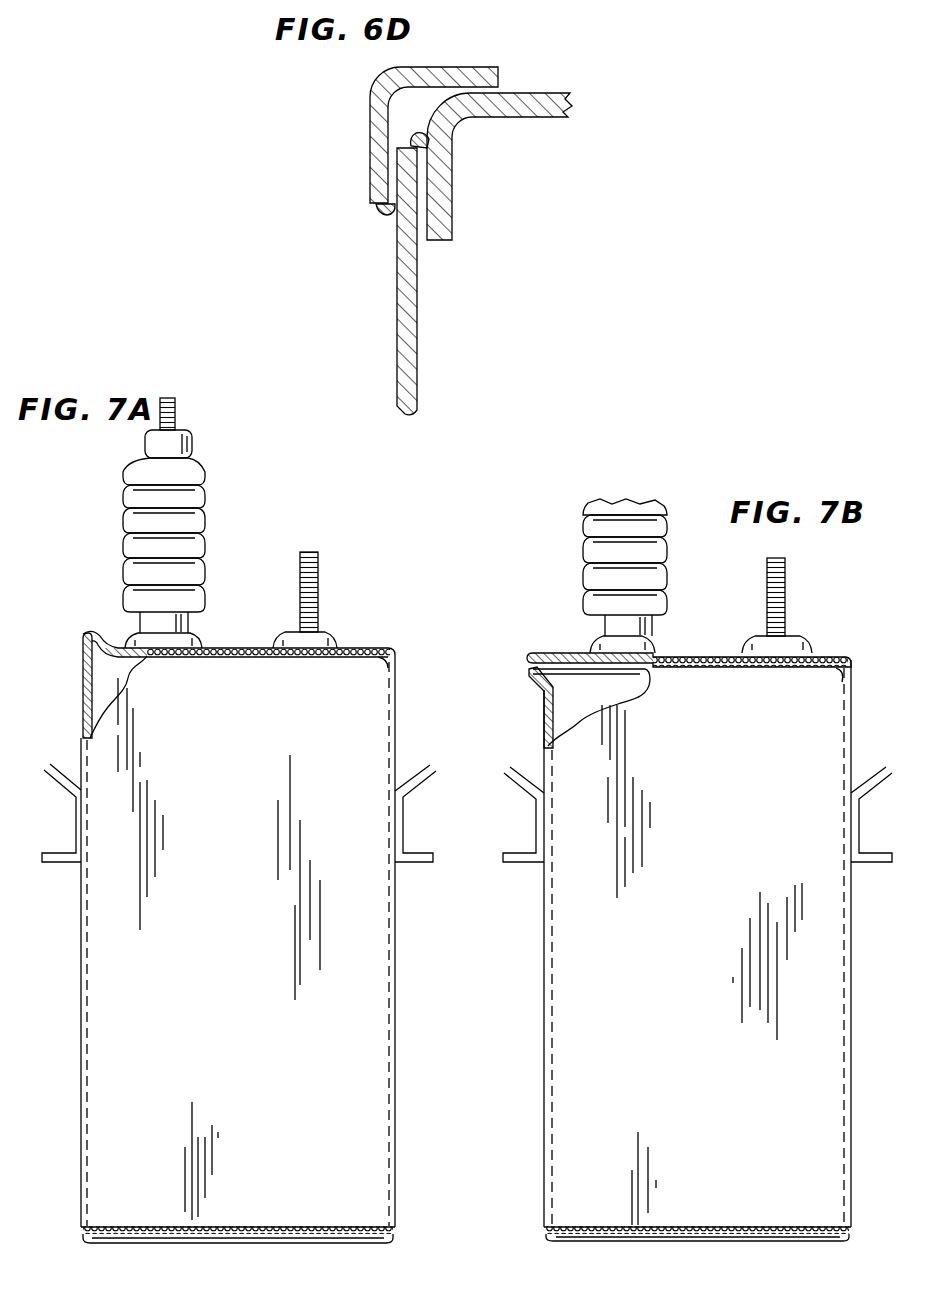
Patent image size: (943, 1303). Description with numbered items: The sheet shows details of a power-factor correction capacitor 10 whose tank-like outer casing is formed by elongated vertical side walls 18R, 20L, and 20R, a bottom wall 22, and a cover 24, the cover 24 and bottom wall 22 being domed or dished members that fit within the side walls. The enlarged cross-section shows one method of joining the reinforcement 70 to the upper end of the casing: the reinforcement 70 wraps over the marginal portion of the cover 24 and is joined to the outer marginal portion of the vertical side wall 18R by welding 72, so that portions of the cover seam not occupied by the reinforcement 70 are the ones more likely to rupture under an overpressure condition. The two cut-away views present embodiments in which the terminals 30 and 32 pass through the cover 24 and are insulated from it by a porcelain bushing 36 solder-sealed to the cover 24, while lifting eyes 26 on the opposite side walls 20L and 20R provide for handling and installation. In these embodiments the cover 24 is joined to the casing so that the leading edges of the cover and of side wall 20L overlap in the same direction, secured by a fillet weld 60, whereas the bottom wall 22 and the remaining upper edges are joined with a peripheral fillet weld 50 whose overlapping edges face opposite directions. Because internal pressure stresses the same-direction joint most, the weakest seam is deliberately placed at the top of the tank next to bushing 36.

In FIG. 7A, the power-factor correction capacitor 10 is at (239, 970).
In FIG. 7B, the power-factor correction capacitor 10 is at (699, 974).
In FIG. 6D, the side wall 18R is at (397, 318).
In FIG. 7A, the side wall 18R is at (250, 764).
In FIG. 7B, the side wall 18R is at (719, 771).
In FIG. 7A, the side wall 20L is at (81, 1003).
In FIG. 7B, the side wall 20L is at (544, 1052).
In FIG. 7A, the side wall 20R is at (395, 1003).
In FIG. 7B, the side wall 20R is at (852, 1052).
In FIG. 7A, the bottom wall 22 is at (252, 1235).
In FIG. 7B, the bottom wall 22 is at (720, 1235).
In FIG. 6D, the cover 24 is at (536, 94).
In FIG. 7A, the cover 24 is at (363, 648).
In FIG. 7B, the cover 24 is at (834, 654).
In FIG. 7A, the lifting eyes 26 is at (60, 765).
In FIG. 7B, the lifting eyes 26 is at (525, 790).
In FIG. 7A, the terminal 30 is at (317, 554).
In FIG. 7B, the terminal 30 is at (786, 588).
In FIG. 7A, the terminal 32 is at (176, 411).
In FIG. 7A, the bushing 36 is at (207, 505).
In FIG. 7B, the bushing 36 is at (658, 582).
In FIG. 6D, the peripheral fillet weld 50 is at (421, 135).
In FIG. 7A, the peripheral fillet weld 50 is at (388, 666).
In FIG. 7B, the peripheral fillet weld 50 is at (842, 680).
In FIG. 7A, the fillet weld 60 is at (92, 635).
In FIG. 7B, the fillet weld 60 is at (528, 660).
In FIG. 6D, the reinforcement 70 is at (373, 125).
In FIG. 6D, the welding 72 is at (386, 217).